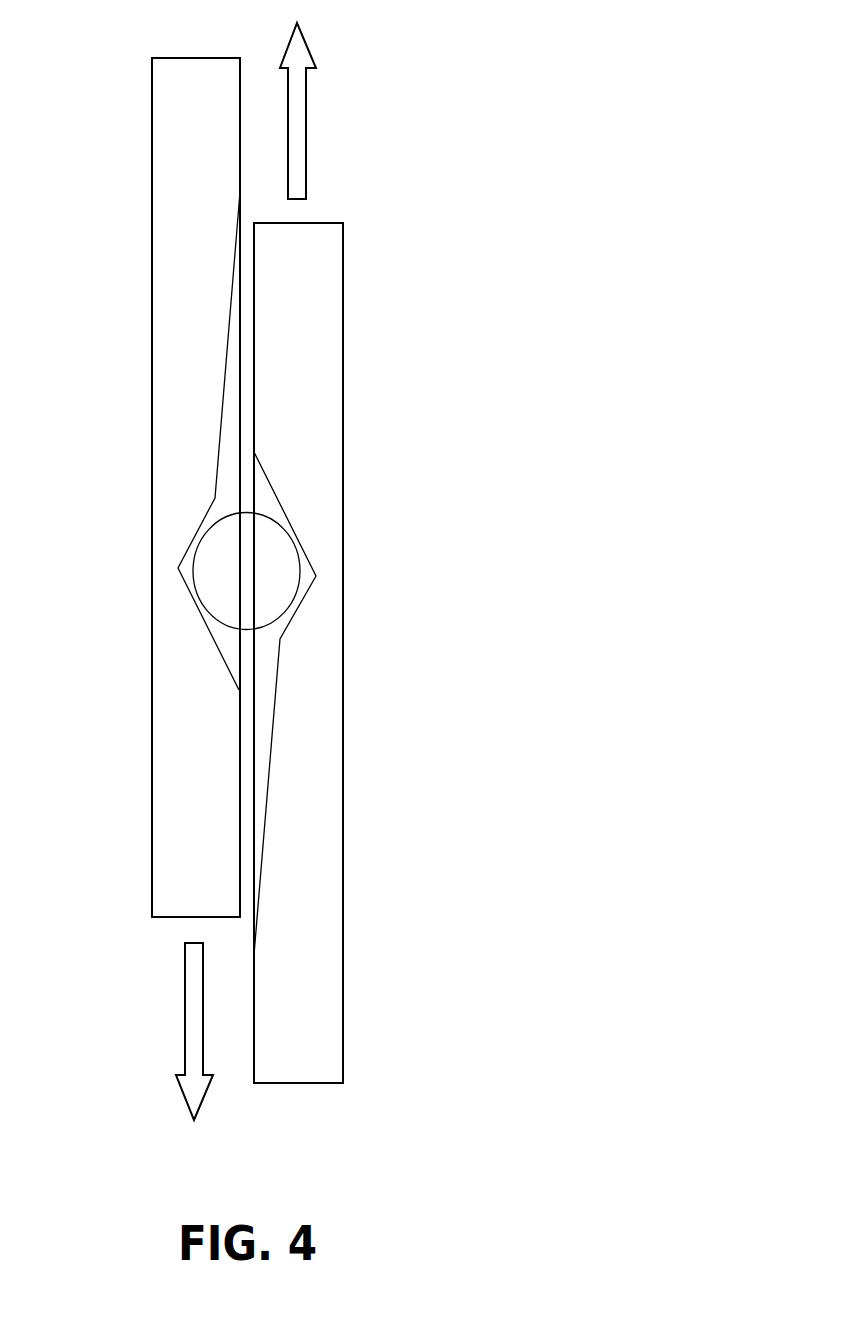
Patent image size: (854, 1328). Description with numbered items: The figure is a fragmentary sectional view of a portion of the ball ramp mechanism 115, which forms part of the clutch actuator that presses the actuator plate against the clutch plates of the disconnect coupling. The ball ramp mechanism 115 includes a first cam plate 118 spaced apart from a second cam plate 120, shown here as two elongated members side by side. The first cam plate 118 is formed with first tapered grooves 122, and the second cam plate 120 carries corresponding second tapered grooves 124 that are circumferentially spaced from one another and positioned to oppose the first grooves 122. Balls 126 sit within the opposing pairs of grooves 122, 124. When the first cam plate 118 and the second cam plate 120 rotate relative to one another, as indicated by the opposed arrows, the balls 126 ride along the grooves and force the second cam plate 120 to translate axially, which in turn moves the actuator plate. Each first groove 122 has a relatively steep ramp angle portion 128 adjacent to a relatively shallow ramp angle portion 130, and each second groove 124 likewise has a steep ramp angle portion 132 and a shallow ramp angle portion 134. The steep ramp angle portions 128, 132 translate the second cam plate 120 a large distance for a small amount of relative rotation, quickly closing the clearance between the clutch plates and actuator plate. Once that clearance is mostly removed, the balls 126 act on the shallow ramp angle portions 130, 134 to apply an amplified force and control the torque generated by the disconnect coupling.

The ball ramp mechanism 115 is at (428, 73).
The first cam plate 118 is at (315, 277).
The second cam plate 120 is at (178, 108).
The first tapered grooves 122 is at (278, 523).
The second tapered grooves 124 is at (203, 588).
The balls 126 is at (268, 570).
The steep ramp angle portion 128 is at (297, 612).
The shallow ramp angle portion 130 is at (274, 712).
The steep ramp angle portion 132 is at (205, 551).
The shallow ramp angle portion 134 is at (222, 412).